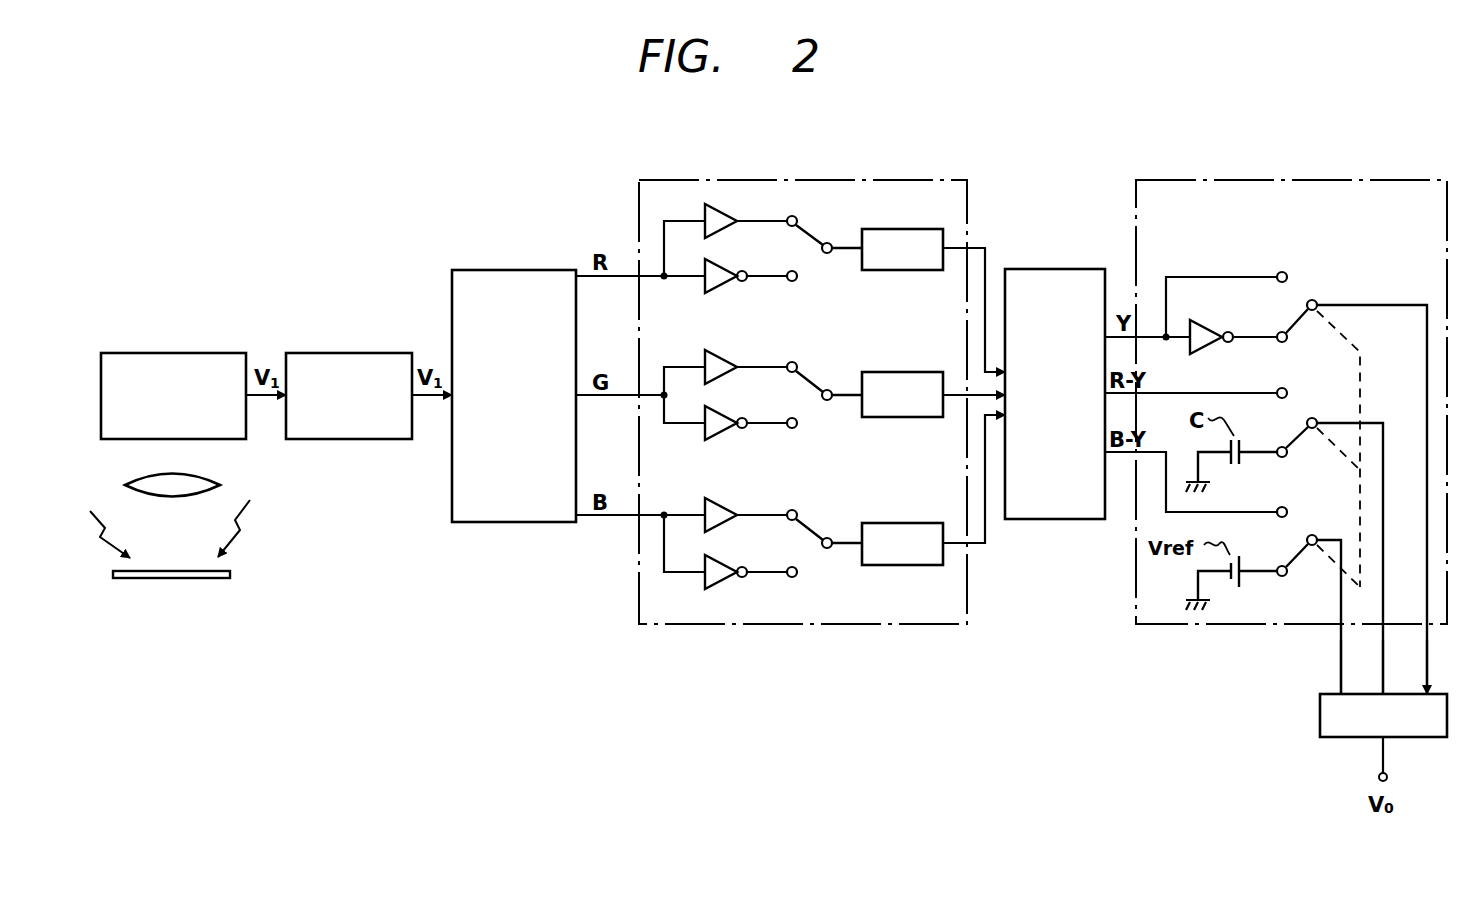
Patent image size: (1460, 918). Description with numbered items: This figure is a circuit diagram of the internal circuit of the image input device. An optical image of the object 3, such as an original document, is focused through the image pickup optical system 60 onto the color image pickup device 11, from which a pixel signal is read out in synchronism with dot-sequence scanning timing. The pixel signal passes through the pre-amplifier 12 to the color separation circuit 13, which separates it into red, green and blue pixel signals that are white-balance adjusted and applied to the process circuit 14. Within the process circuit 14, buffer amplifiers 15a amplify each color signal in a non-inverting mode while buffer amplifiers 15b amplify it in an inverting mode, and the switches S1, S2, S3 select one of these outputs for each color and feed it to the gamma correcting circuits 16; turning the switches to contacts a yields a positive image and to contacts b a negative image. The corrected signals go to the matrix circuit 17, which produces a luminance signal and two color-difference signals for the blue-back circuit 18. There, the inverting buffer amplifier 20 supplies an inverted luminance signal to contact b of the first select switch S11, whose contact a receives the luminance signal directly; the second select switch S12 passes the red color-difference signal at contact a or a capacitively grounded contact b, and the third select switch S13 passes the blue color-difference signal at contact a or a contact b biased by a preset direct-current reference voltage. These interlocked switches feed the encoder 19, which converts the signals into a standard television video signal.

The object 3 is at (193, 572).
The image pickup optical system 60 is at (204, 485).
The color image pickup device 11 is at (231, 352).
The pre-amplifier 12 is at (401, 352).
The color separation circuit 13 is at (561, 270).
The process circuit 14 is at (956, 177).
The buffer amplifiers 15a is at (726, 497).
The buffer amplifiers 15b is at (726, 562).
The γ correcting circuits 16 is at (918, 515).
The matrix circuit 17 is at (1092, 267).
The blue-back circuit 18 is at (1434, 172).
The encoder 19 is at (1320, 714).
The inverting buffer amplifier 20 is at (1213, 323).
The switch S1 is at (824, 230).
The switch S2 is at (824, 373).
The switch S3 is at (824, 515).
The first select switch S11 is at (1300, 296).
The second select switch S12 is at (1288, 418).
The third select switch S13 is at (1290, 536).